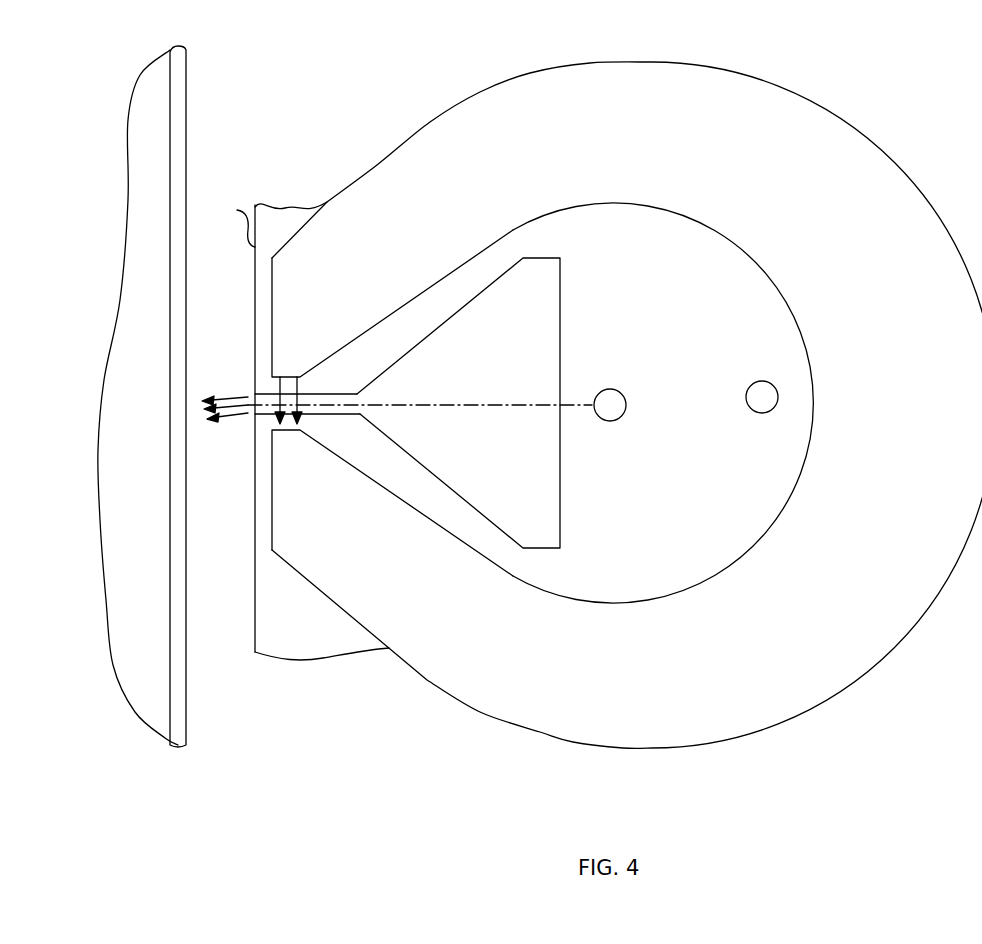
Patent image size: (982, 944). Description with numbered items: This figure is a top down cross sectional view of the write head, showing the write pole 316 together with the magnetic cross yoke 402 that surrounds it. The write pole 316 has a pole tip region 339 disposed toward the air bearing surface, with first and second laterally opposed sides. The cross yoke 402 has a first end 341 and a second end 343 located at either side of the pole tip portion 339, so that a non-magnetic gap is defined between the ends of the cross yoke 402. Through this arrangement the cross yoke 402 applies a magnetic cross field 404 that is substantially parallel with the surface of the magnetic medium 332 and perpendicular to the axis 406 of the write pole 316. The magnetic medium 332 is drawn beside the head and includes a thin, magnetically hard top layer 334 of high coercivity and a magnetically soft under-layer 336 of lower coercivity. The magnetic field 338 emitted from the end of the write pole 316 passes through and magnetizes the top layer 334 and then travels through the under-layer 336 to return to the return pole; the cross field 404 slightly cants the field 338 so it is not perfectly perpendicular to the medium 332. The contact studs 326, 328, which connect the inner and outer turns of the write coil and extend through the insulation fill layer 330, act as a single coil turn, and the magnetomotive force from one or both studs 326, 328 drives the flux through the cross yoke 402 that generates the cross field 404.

The write pole 316 is at (560, 310).
The contact stud 326 is at (762, 390).
The contact stud 328 is at (608, 406).
The insulation fill layer 330 is at (280, 205).
The magnetic medium 332 is at (141, 390).
The top layer 334 is at (186, 68).
The under-layer 336 is at (135, 127).
The magnetic field 338 is at (242, 396).
The pole tip region 339 is at (333, 414).
The first end of cross yoke 341 is at (290, 377).
The second end of cross yoke 343 is at (288, 430).
The magnetic cross yoke 402 is at (667, 132).
The magnetic cross field 404 is at (302, 393).
The axis of write pole 406 is at (432, 405).